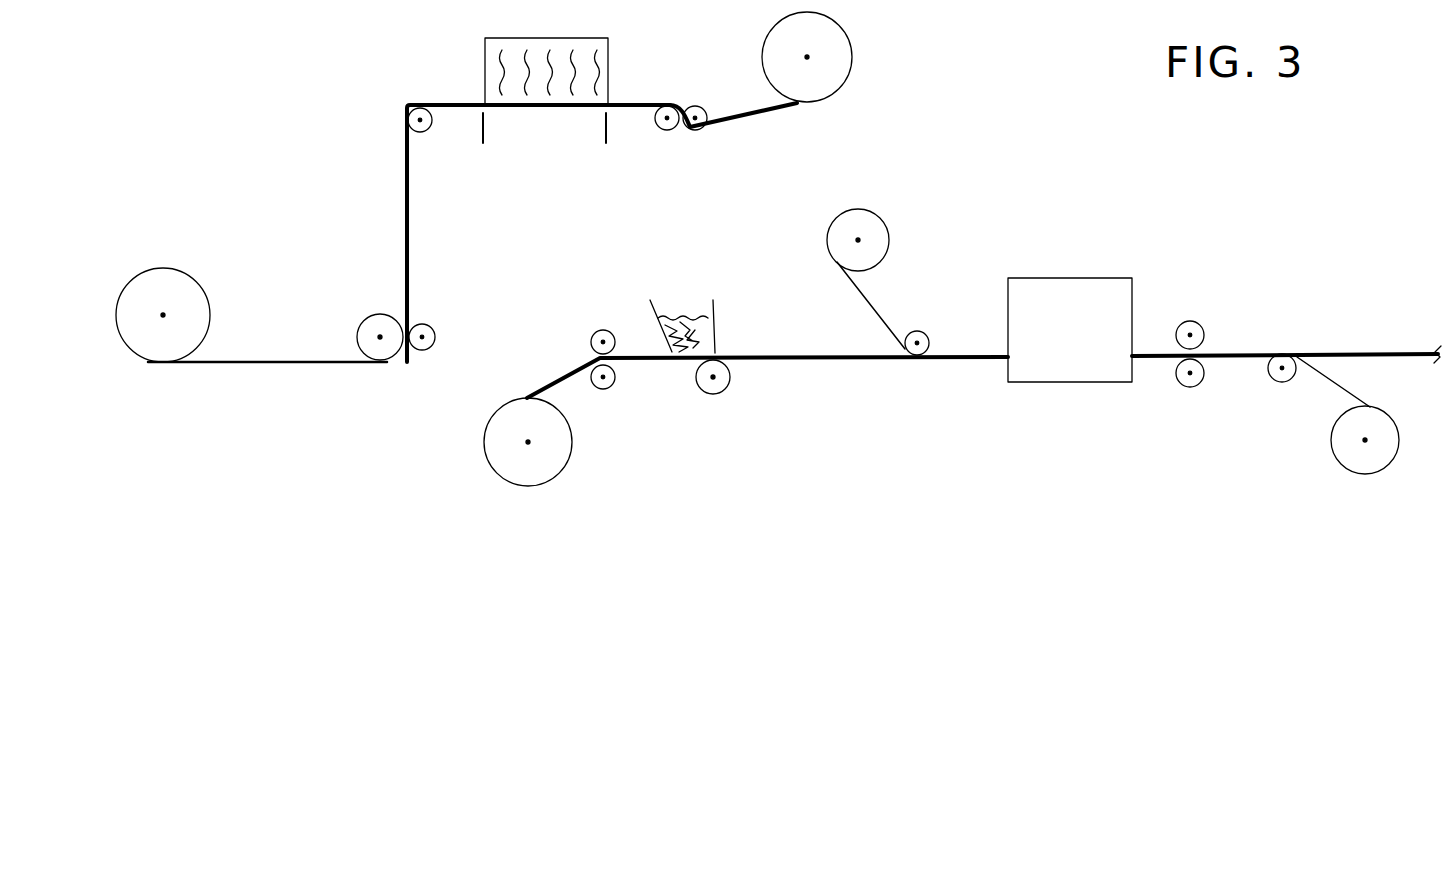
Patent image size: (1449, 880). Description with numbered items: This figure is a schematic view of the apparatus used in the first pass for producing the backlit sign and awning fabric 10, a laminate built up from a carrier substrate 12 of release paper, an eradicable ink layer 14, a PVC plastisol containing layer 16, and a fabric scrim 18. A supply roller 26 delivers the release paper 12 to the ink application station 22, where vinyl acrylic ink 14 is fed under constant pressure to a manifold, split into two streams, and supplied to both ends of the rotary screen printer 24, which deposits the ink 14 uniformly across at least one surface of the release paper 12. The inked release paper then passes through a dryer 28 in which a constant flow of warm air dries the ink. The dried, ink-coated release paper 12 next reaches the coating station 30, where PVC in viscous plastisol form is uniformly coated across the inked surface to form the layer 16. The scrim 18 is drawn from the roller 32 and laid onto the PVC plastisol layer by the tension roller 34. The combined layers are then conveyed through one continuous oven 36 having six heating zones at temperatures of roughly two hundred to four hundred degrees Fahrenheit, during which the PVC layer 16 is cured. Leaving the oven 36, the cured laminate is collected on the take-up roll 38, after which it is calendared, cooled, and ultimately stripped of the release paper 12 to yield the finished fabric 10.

The backlit sign and awning fabric 10 is at (1397, 352).
The carrier substrate 12 is at (223, 362).
The eradicable ink layer 14 is at (405, 212).
The PVC plastisol containing layer 16 is at (792, 352).
The fabric scrim 18 is at (870, 302).
The ink application station 22 is at (338, 314).
The rotary screen printer 24 is at (367, 347).
The supply roller 26 is at (150, 280).
The dryer 28 is at (608, 58).
The coating station 30 is at (731, 300).
The roller 32 is at (873, 217).
The tension roller 34 is at (927, 330).
The oven 36 is at (1112, 285).
The take-up roll 38 is at (1337, 458).